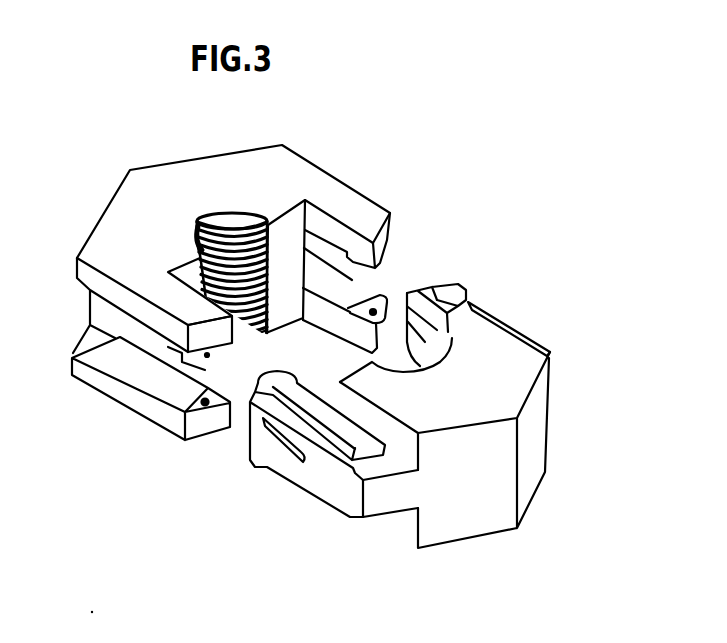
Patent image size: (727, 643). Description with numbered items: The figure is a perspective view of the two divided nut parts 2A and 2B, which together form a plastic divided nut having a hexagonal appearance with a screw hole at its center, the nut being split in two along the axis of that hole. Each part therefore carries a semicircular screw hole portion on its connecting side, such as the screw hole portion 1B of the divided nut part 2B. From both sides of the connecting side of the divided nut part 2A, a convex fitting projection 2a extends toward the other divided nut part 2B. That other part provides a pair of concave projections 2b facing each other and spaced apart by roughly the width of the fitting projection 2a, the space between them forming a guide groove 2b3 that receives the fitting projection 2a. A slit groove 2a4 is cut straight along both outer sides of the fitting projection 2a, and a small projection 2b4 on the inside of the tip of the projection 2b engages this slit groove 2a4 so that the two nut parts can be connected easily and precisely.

The screw hole portion 1B is at (239, 214).
The divided nut part 2A is at (435, 404).
The divided nut part 2B is at (102, 213).
The fitting projection 2a is at (468, 297).
The projection 2b is at (350, 197).
The slit groove 2a4 is at (476, 298).
The guide groove 2b3 is at (370, 274).
The small projection 2b4 is at (205, 406).